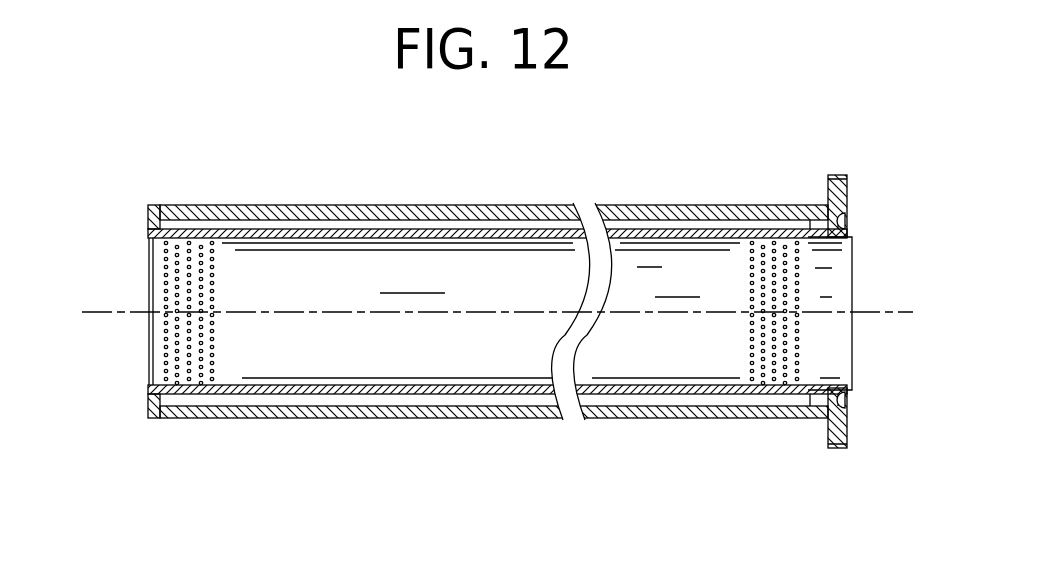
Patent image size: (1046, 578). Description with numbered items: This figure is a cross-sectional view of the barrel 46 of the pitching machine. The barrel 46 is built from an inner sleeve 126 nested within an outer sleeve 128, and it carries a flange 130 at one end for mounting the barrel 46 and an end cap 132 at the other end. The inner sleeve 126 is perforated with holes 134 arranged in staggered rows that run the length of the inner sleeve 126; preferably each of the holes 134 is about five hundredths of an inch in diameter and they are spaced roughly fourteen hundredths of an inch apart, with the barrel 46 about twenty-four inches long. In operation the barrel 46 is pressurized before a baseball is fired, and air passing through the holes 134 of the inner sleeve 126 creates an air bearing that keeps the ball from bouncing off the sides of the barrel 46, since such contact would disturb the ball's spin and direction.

The barrel 46 is at (294, 490).
The inner sleeve 126 is at (370, 233).
The outer sleeve 128 is at (487, 213).
The flange 130 is at (848, 447).
The end cap 132 is at (148, 208).
The holes 134 is at (214, 293).